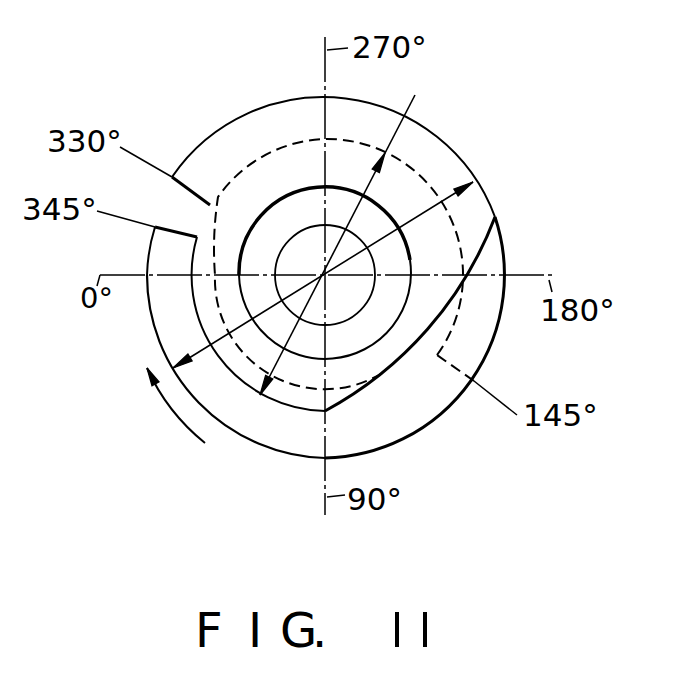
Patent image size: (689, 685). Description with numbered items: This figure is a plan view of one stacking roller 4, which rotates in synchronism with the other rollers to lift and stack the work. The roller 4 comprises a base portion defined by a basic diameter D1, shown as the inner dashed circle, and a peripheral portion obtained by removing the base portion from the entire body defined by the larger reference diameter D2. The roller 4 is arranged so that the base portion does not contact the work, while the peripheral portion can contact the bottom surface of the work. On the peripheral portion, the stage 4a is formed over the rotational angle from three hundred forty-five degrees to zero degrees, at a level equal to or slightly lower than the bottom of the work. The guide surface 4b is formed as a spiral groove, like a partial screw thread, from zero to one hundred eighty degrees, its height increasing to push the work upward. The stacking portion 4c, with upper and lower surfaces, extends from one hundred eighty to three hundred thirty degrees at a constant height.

The roller 4 is at (253, 97).
The stage 4a is at (155, 256).
The guide surface 4b is at (302, 390).
The stacking portion 4c is at (462, 152).
The basic diameter D1 is at (365, 234).
The reference diameter D2 is at (443, 198).